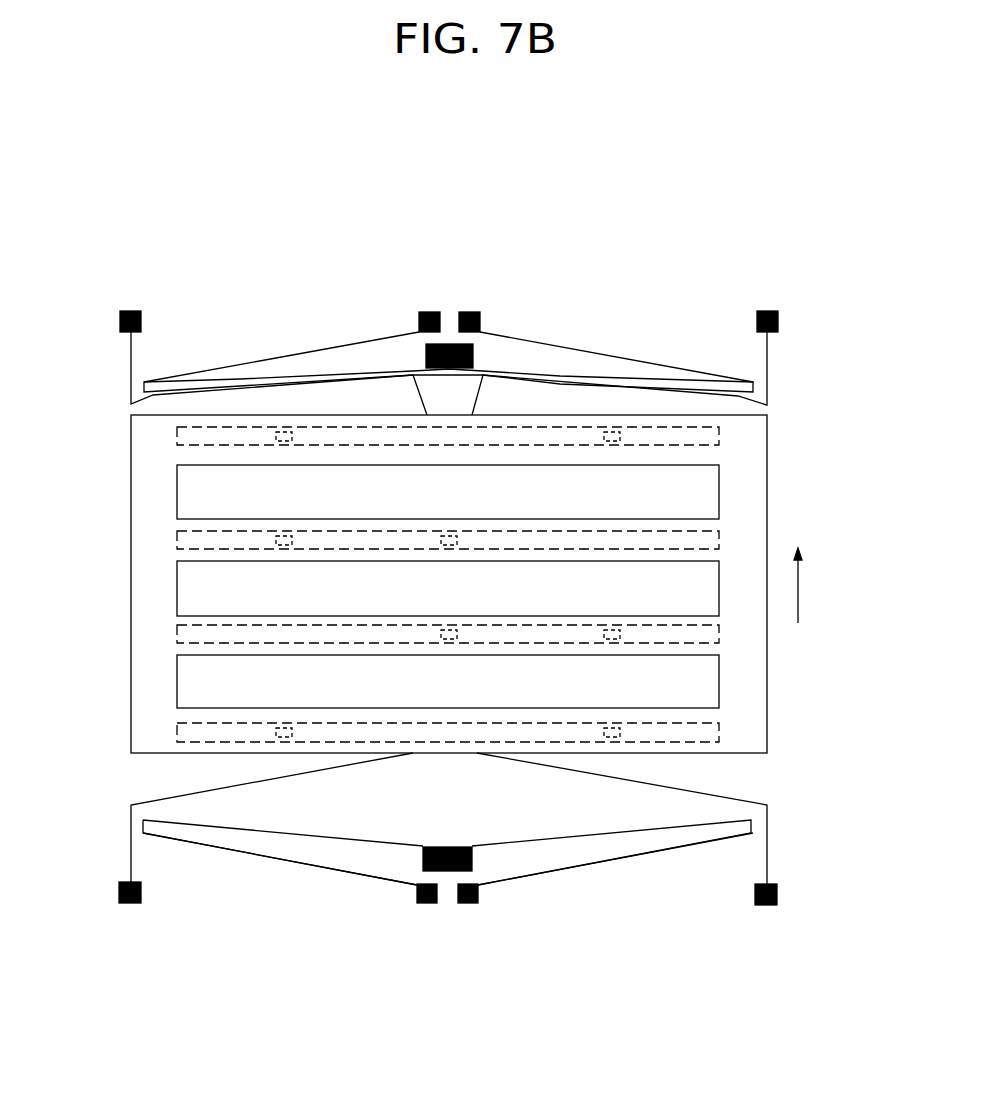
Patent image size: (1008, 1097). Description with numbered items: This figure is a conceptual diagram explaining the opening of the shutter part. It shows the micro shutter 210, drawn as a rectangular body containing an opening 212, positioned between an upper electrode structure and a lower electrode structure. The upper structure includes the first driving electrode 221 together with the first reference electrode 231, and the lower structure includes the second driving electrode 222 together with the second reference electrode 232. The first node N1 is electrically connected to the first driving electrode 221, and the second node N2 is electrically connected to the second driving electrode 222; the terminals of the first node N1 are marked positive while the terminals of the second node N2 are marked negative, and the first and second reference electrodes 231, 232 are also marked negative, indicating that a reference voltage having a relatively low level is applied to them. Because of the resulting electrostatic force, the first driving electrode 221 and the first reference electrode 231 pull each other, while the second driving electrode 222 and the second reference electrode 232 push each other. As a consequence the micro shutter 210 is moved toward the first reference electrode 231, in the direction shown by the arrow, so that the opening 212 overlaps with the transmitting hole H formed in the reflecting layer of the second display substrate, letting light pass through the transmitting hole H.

The micro shutter 210 is at (130, 490).
The opening 212 is at (719, 493).
The first driving electrode 221 is at (768, 378).
The second driving electrode 222 is at (713, 798).
The first reference electrode 231 is at (532, 370).
The second reference electrode 232 is at (533, 843).
The transmitting hole H is at (545, 678).
The first node N1 is at (450, 309).
The second node N2 is at (447, 914).